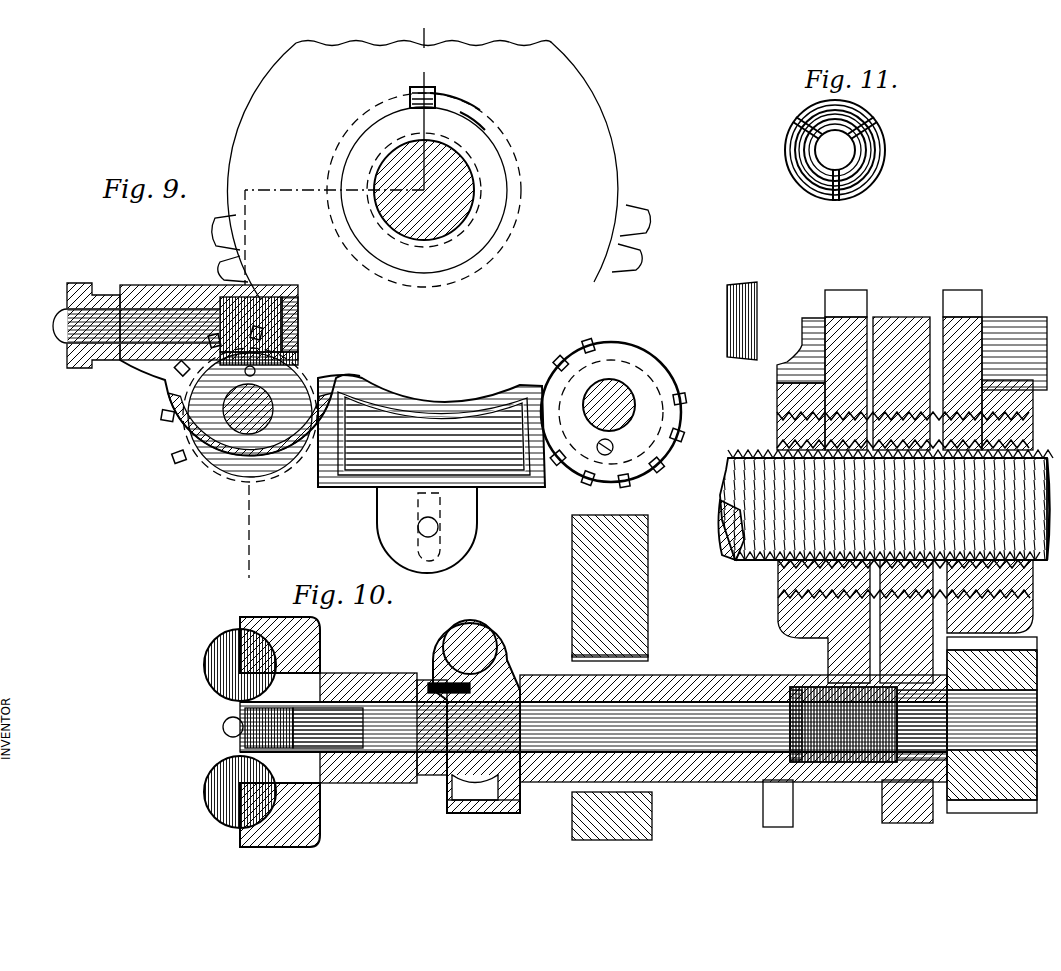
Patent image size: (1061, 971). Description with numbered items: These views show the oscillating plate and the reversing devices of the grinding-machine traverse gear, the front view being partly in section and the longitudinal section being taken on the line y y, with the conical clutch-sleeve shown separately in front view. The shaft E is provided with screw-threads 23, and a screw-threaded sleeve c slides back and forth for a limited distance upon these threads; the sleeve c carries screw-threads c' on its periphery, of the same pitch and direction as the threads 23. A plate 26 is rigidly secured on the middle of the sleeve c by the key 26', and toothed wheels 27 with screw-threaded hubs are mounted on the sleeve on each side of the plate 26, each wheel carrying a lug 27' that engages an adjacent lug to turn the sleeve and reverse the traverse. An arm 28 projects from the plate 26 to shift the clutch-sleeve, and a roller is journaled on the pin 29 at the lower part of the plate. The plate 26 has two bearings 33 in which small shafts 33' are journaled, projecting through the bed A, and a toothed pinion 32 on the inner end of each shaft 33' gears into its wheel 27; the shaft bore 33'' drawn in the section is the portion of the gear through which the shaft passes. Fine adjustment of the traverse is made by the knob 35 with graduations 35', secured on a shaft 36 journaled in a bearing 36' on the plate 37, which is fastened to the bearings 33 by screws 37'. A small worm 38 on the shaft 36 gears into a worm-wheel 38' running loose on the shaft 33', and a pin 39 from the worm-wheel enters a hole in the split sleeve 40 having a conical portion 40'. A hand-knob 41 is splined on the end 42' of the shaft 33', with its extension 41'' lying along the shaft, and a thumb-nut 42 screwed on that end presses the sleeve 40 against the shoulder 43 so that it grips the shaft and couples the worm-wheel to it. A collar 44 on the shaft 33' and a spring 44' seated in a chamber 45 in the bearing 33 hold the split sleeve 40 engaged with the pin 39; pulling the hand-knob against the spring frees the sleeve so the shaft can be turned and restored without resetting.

In FIG. 9, the screw-threads 23 is at (466, 160).
In FIG. 10, the screw-threads 23 is at (742, 566).
In FIG. 9, the plate 26 is at (422, 307).
In FIG. 10, the plate 26 is at (898, 559).
In FIG. 9, the key 26' is at (404, 90).
In FIG. 9, the toothed wheels 27 is at (435, 239).
In FIG. 10, the toothed wheels 27 is at (905, 362).
In FIG. 10, the lug 27' is at (912, 318).
In FIG. 9, the arm 28 is at (442, 548).
In FIG. 9, the pin 29 is at (418, 530).
In FIG. 9, the toothed pinions 32 is at (178, 450).
In FIG. 10, the toothed pinions 32 is at (983, 812).
In FIG. 9, the bearings 33 is at (443, 414).
In FIG. 10, the bearings 33 is at (733, 716).
In FIG. 9, the small shaft 33' is at (208, 415).
In FIG. 10, the small shaft 33' is at (593, 757).
In FIG. 9, the gear bore 33'' is at (665, 409).
In FIG. 9, the knob 35 is at (93, 313).
In FIG. 9, the graduations 35' is at (742, 306).
In FIG. 9, the shaft 36 is at (124, 326).
In FIG. 10, the shaft 36 is at (492, 637).
In FIG. 9, the bearing 36' is at (209, 311).
In FIG. 9, the plate 37 is at (429, 446).
In FIG. 10, the plate 37 is at (498, 802).
In FIG. 9, the screws 37' is at (621, 442).
In FIG. 10, the screws 37' is at (549, 818).
In FIG. 9, the small worm 38 is at (286, 321).
In FIG. 10, the small worm 38 is at (492, 718).
In FIG. 9, the worm-wheel 38' is at (294, 342).
In FIG. 10, the worm-wheel 38' is at (428, 748).
In FIG. 9, the pin 39 is at (162, 388).
In FIG. 10, the pin 39 is at (438, 680).
In FIG. 10, the split sleeve 40 is at (355, 770).
In FIG. 11, the split sleeve 40 is at (853, 150).
In FIG. 10, the conical portion 40' is at (373, 791).
In FIG. 11, the conical portion 40' is at (859, 157).
In FIG. 10, the hand-knob 41 is at (293, 732).
In FIG. 10, the nut extension 41'' is at (374, 719).
In FIG. 10, the thumb-nut 42 is at (225, 728).
In FIG. 10, the end of shaft 42' is at (287, 697).
In FIG. 10, the shoulder 43 is at (472, 790).
In FIG. 10, the collar 44 is at (889, 760).
In FIG. 10, the spring 44' is at (811, 754).
In FIG. 10, the chamber 45 is at (806, 687).
In FIG. 10, the bed A is at (650, 617).
In FIG. 9, the shaft E is at (462, 186).
In FIG. 10, the shaft E is at (720, 512).
In FIG. 9, the screw-threaded sleeve c is at (472, 127).
In FIG. 10, the screw-threaded sleeve c is at (889, 505).
In FIG. 9, the screw-threads c' is at (463, 102).
In FIG. 10, the screw-threads c' is at (764, 607).
In FIG. 9, the section line y is at (343, 303).